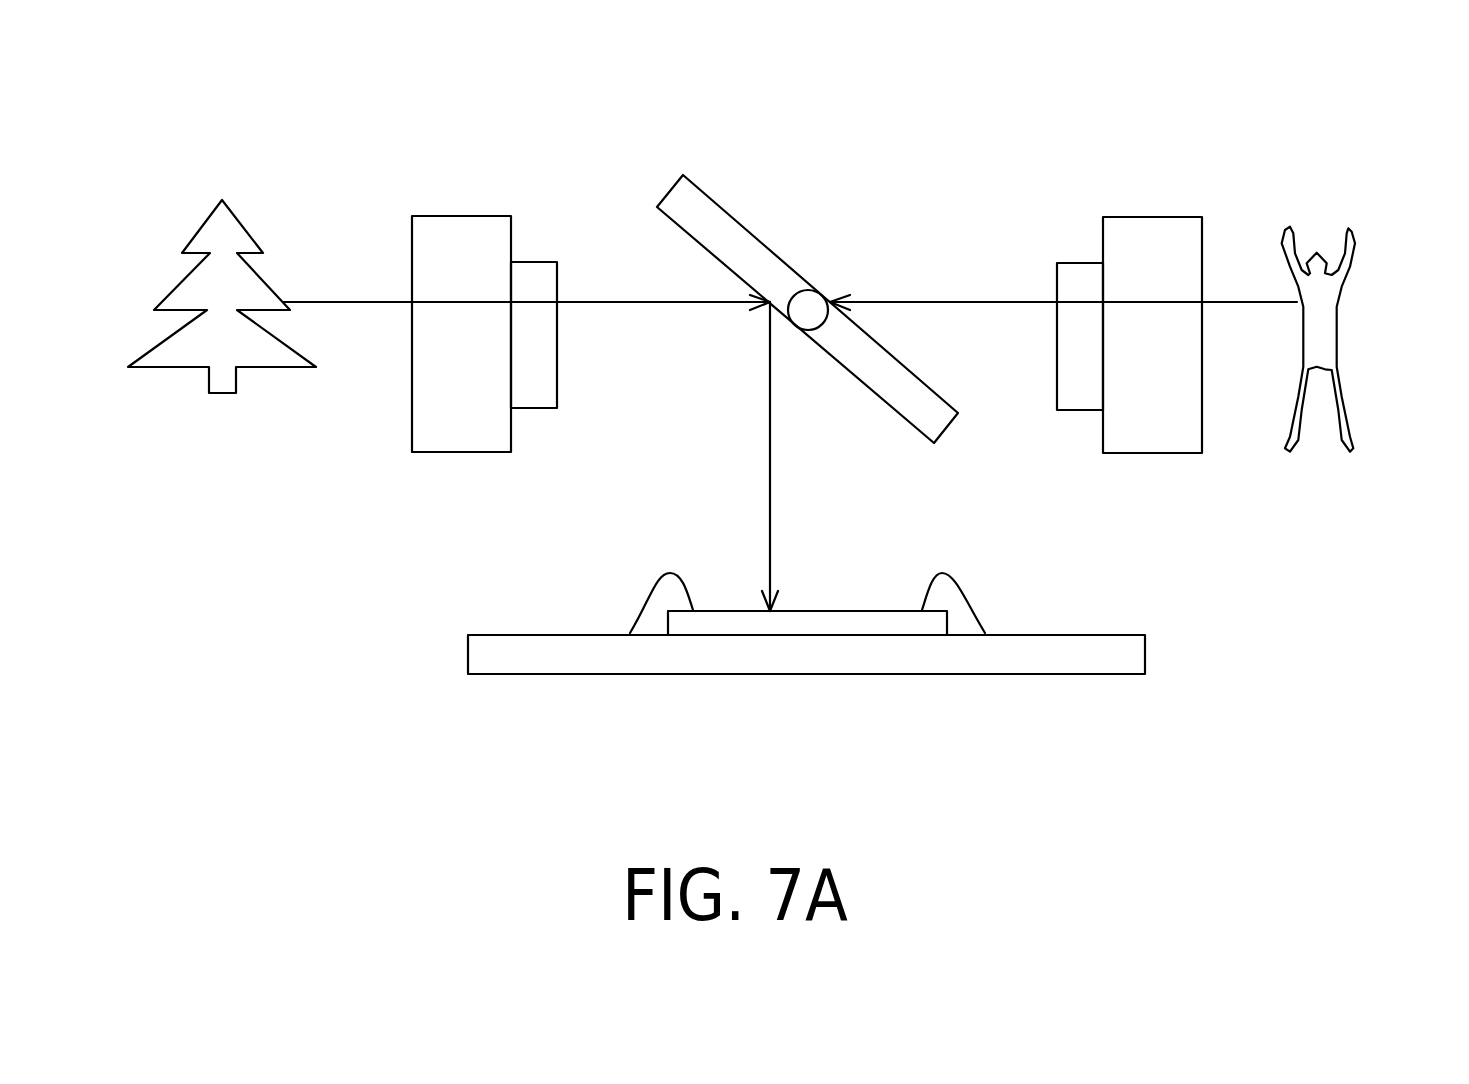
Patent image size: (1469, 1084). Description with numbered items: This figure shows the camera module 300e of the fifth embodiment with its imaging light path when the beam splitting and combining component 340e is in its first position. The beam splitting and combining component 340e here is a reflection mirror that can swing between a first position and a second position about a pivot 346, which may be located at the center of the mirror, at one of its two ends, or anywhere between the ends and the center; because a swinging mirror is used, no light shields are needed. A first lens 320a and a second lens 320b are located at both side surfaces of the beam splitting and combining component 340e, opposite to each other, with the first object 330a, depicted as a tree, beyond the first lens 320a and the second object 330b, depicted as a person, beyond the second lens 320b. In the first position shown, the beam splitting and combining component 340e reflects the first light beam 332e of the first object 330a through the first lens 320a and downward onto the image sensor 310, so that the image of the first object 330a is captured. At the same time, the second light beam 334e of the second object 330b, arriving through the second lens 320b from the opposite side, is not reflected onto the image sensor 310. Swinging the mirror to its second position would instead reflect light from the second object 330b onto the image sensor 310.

The camera module 300e is at (1173, 548).
The first object 330a is at (182, 282).
The first light beam 332e is at (362, 300).
The first lens 320a is at (453, 243).
The beam splitting and combining component 340e is at (745, 255).
The pivot 346 is at (808, 310).
The second light beam 334e is at (1238, 302).
The second lens 320b is at (1158, 245).
The second object 330b is at (1337, 317).
The image sensor 310 is at (828, 620).